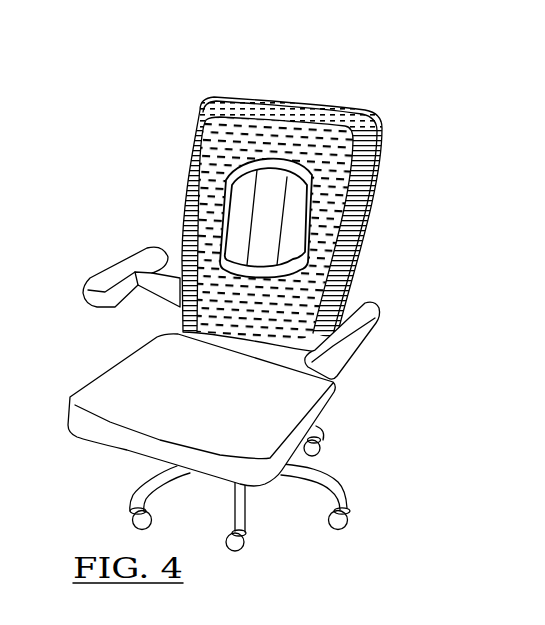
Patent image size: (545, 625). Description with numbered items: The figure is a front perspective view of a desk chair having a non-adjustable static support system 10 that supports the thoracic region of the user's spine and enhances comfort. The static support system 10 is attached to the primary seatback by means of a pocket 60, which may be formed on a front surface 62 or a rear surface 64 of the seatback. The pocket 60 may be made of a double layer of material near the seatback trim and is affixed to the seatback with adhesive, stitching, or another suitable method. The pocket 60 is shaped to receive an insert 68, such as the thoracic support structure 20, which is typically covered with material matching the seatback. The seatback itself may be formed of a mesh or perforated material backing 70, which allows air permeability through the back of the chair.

The static support system 10 is at (262, 298).
The thoracic support structure 20 is at (293, 242).
The pocket 60 is at (308, 164).
The front surface 62 is at (263, 112).
The rear surface 64 is at (378, 122).
The insert 68 is at (230, 197).
The mesh or perforated material backing 70 is at (220, 145).